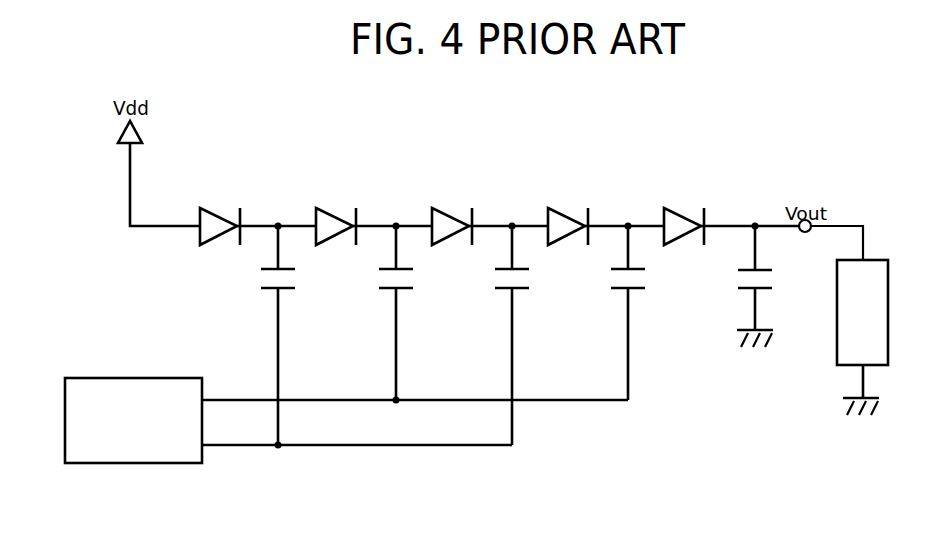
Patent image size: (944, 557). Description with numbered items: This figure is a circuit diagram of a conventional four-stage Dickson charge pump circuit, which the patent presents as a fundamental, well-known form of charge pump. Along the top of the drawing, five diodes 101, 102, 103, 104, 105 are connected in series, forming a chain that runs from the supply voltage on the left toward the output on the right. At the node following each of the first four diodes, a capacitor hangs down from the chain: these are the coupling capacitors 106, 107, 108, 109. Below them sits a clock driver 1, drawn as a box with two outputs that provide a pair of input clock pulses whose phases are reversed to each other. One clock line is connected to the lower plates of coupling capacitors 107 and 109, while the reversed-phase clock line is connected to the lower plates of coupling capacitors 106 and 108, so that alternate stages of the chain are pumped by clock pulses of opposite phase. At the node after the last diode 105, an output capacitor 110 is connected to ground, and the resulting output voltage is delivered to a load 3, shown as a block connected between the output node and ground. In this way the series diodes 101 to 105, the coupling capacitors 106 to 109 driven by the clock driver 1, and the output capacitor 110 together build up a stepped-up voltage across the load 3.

The clock driver 1 is at (115, 463).
The load 3 is at (835, 332).
The diode 101 is at (200, 208).
The diode 102 is at (316, 208).
The diode 103 is at (432, 210).
The diode 104 is at (547, 210).
The diode 105 is at (663, 210).
The coupling capacitor 106 is at (260, 275).
The coupling capacitor 107 is at (378, 275).
The coupling capacitor 108 is at (493, 275).
The coupling capacitor 109 is at (610, 275).
The output capacitor 110 is at (735, 278).